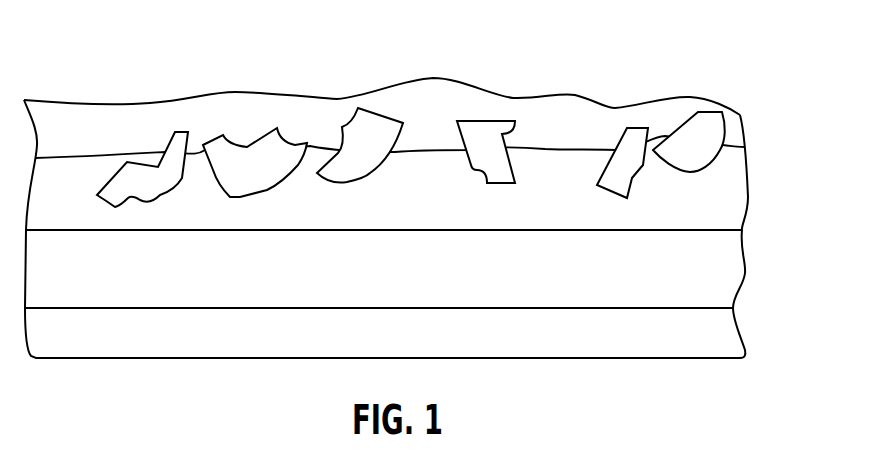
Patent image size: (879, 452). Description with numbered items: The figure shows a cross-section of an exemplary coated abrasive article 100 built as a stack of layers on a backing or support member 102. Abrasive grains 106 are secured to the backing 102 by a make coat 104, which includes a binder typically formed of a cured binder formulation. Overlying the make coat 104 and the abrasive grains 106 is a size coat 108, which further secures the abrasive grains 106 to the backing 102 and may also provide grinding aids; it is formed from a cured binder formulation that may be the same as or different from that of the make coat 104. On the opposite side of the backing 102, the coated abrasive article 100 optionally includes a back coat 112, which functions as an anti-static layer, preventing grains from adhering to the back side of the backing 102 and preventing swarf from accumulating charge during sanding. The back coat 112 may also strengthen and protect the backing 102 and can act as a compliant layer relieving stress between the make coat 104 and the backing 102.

The coated abrasive article 100 is at (733, 48).
The backing 102 is at (735, 260).
The make coat 104 is at (737, 183).
The abrasive grains 106 is at (173, 148).
The size coat 108 is at (745, 130).
The back coat 112 is at (735, 330).